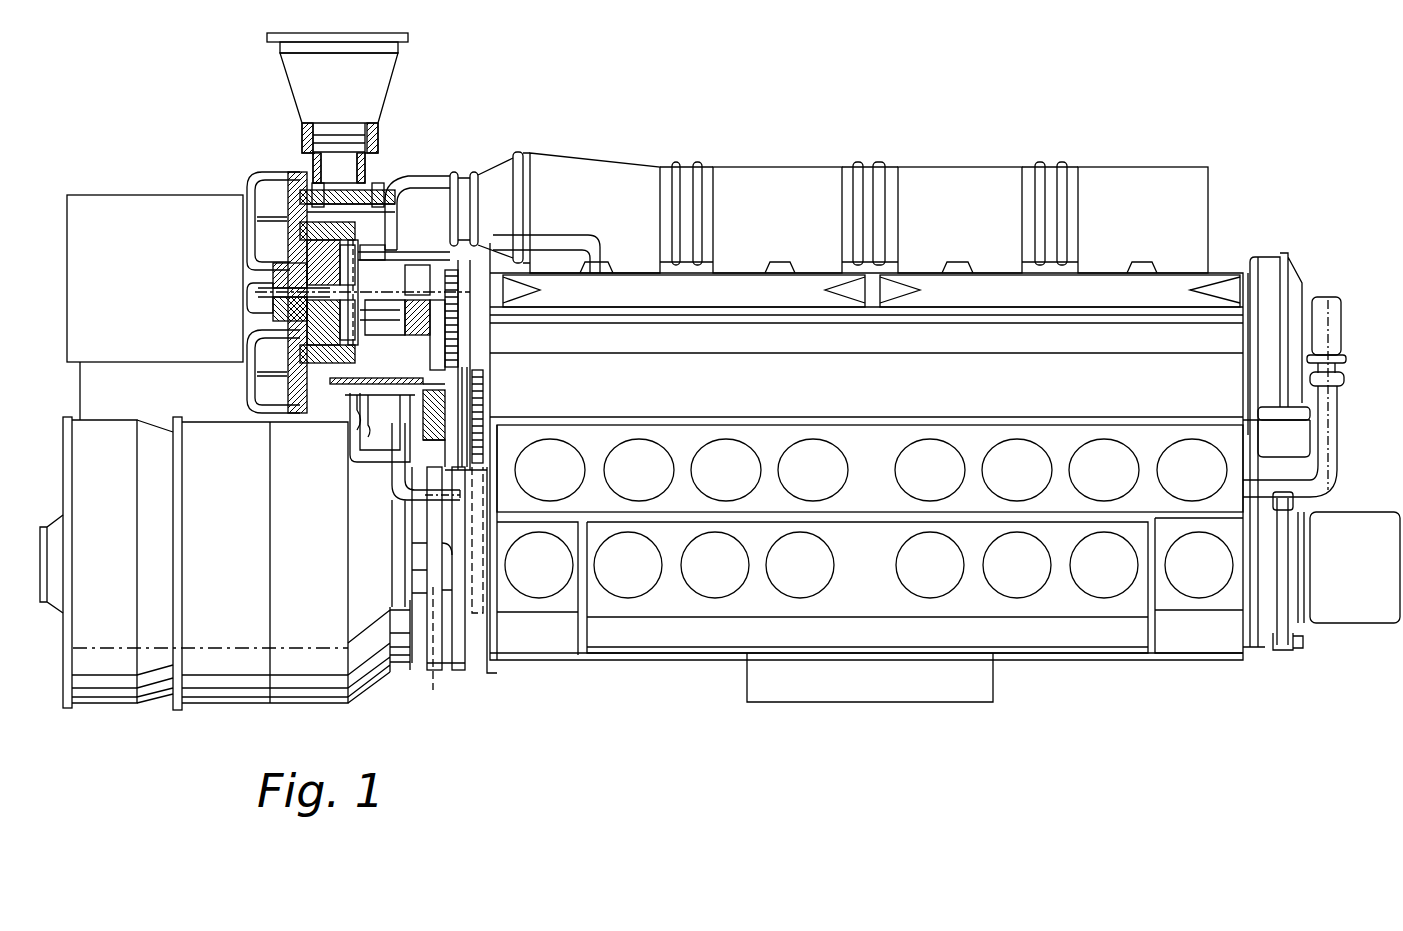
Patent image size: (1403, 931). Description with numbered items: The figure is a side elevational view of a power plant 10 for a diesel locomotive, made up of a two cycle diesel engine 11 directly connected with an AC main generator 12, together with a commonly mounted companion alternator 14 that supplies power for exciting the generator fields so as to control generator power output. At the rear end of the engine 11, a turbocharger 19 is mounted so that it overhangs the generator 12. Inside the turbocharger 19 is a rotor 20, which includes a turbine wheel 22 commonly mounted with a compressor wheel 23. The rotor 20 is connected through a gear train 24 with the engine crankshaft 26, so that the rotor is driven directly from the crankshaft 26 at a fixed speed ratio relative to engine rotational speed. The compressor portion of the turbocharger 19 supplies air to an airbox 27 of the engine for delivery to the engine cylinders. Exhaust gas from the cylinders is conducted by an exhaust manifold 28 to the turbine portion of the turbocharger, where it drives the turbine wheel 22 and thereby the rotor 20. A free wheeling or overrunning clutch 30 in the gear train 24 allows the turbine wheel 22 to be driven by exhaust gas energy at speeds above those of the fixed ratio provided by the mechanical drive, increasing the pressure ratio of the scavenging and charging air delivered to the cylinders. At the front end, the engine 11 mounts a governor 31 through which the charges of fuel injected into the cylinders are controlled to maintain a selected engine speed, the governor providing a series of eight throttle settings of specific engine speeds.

The power plant 10 is at (878, 130).
The two cycle diesel engine 11 is at (1195, 290).
The AC main generator 12 is at (218, 685).
The companion alternator 14 is at (312, 686).
The turbocharger 19 is at (266, 172).
The rotor 20 is at (430, 220).
The turbine wheel 22 is at (355, 345).
The compressor wheel 23 is at (268, 265).
The gear train 24 is at (458, 343).
The engine crankshaft 26 is at (431, 676).
The airbox 27 is at (867, 497).
The exhaust manifold 28 is at (757, 185).
The overrunning clutch 30 is at (478, 393).
The governor 31 is at (1322, 300).